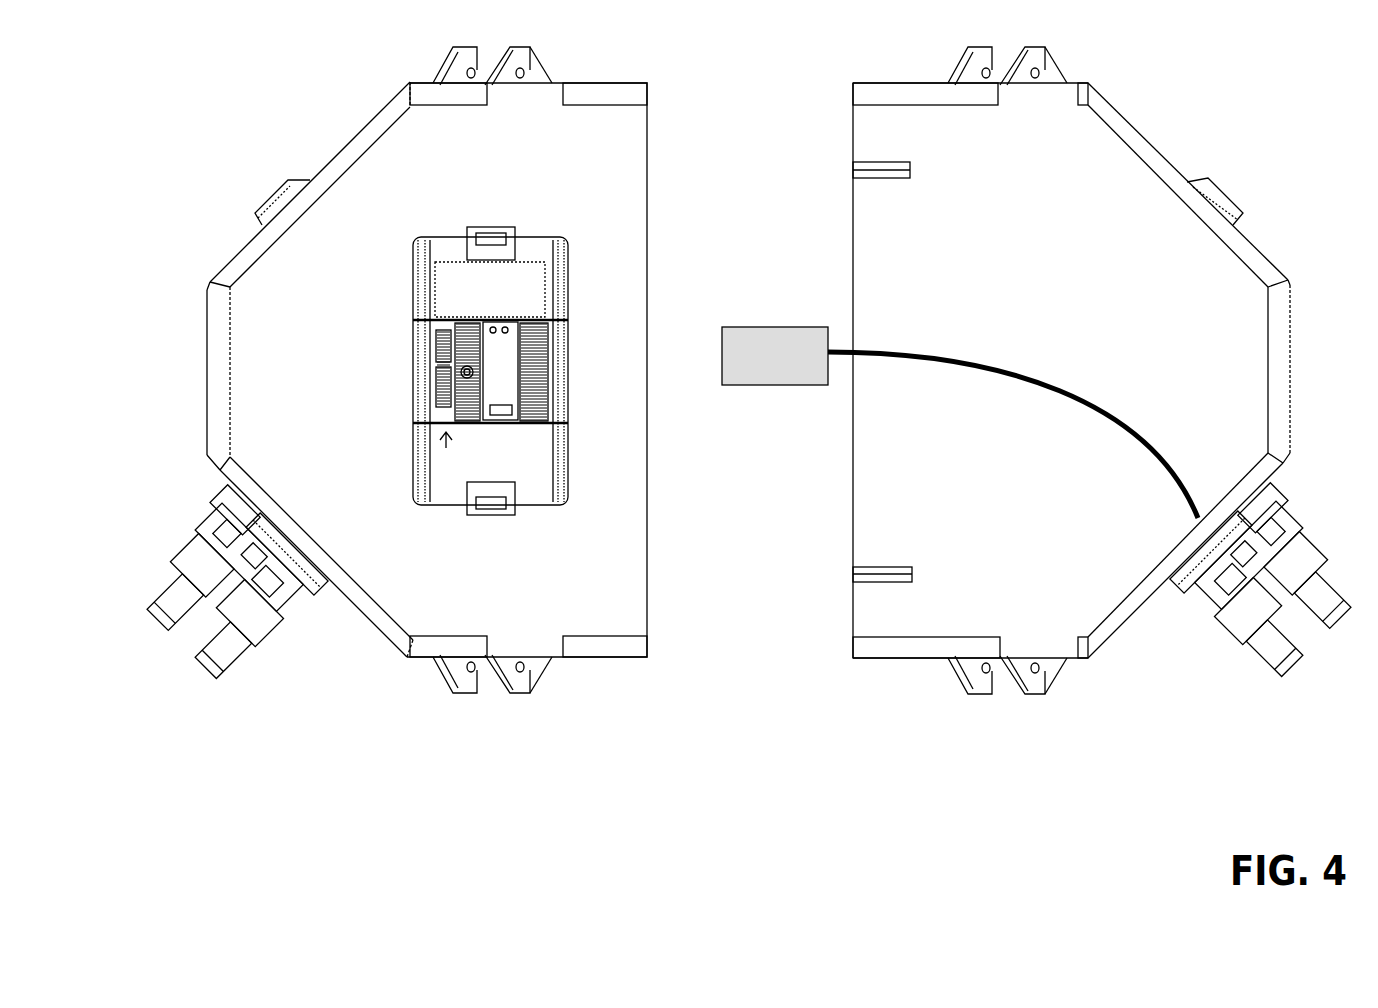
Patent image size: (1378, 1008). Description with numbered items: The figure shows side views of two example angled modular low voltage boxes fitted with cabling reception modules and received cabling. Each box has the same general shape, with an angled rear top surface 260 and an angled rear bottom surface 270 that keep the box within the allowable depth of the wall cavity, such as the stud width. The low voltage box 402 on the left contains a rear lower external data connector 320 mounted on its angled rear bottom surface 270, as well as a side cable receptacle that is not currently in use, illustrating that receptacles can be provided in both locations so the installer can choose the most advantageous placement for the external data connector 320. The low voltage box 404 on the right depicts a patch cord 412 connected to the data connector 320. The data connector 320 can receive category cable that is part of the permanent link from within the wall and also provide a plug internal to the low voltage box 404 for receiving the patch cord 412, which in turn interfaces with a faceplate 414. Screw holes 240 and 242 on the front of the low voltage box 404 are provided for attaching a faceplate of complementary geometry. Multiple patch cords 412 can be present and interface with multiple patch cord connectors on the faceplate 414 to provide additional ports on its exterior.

The low voltage box 402 is at (355, 60).
The low voltage box 404 is at (893, 55).
The angled rear top surface 260 is at (328, 157).
The angled rear bottom surface 270 is at (372, 640).
The external data connector 320 is at (205, 530).
The screw hole 240 is at (853, 176).
The screw hole 242 is at (853, 580).
The patch cord 412 is at (993, 363).
The faceplate 414 is at (775, 327).